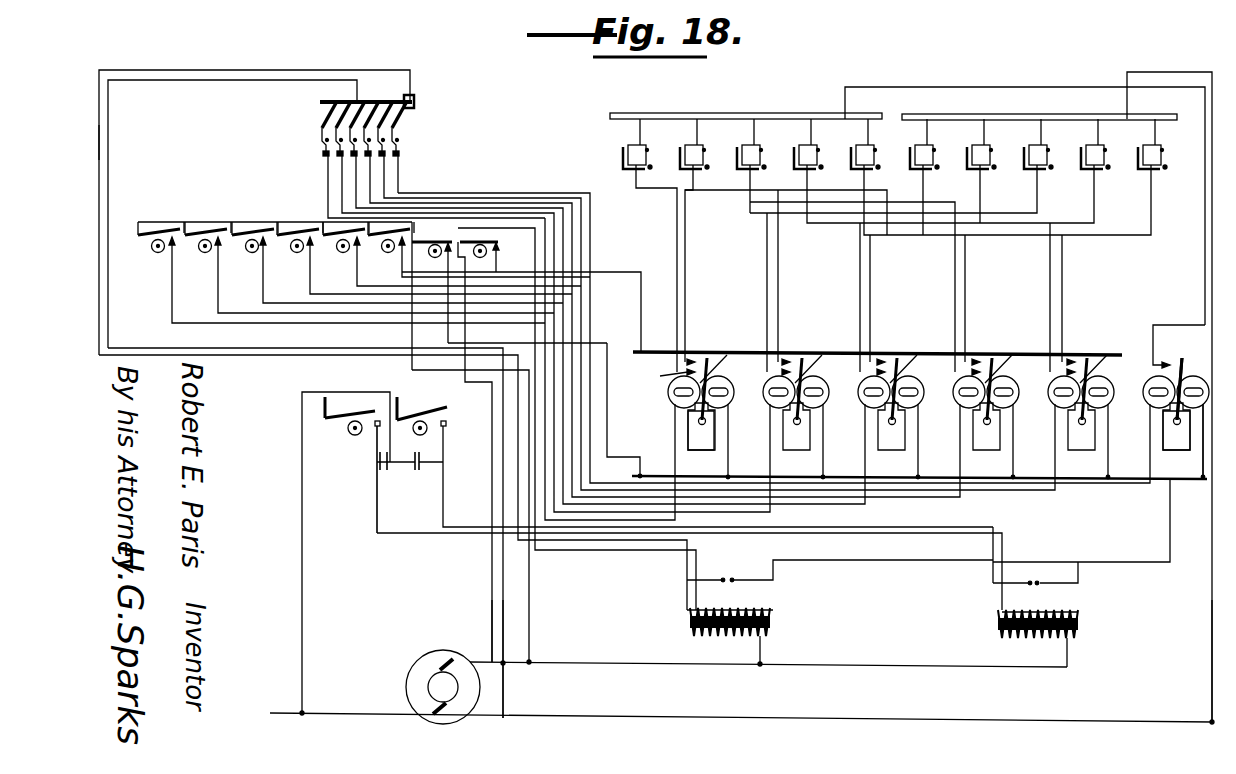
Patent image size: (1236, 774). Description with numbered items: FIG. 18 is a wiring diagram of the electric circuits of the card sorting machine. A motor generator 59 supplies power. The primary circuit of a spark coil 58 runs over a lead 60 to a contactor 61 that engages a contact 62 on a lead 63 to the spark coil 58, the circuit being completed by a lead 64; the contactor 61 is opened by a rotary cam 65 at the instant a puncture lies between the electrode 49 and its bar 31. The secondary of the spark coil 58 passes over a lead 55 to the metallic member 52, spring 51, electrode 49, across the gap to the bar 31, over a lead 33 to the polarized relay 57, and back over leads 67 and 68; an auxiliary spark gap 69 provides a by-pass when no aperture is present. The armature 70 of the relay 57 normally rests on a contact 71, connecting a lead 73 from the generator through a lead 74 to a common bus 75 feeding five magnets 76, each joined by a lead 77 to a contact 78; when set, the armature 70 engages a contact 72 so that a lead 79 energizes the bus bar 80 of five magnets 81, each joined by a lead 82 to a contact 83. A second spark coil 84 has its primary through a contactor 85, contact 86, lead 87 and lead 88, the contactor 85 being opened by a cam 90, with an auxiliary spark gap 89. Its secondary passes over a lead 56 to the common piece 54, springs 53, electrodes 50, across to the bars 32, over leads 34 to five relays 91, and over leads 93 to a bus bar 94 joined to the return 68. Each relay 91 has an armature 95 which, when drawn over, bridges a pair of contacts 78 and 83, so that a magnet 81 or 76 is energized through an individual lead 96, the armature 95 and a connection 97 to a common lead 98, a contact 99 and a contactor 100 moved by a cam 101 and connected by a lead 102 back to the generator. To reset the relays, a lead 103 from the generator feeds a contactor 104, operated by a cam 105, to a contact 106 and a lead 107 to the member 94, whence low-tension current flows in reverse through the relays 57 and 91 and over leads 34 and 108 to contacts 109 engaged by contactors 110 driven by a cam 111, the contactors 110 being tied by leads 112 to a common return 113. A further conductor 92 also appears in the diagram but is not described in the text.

The bar 31 is at (396, 170).
The bars 32 is at (322, 168).
The lead 33 is at (400, 186).
The leads 34 is at (330, 190).
The electrode 49 is at (390, 137).
The electrodes 50 is at (322, 140).
The spring 51 is at (404, 118).
The metallic member 52 is at (414, 98).
The springs 53 is at (324, 122).
The common metallic piece 54 is at (336, 104).
The lead 55 is at (236, 70).
The lead 56 is at (198, 82).
The polarized relay 57 is at (1176, 430).
The spark coil 58 is at (770, 616).
The motor generator 59 is at (430, 684).
The lead 60 is at (302, 573).
The contactor 61 is at (371, 412).
The contact 62 is at (377, 432).
The lead 63 is at (377, 518).
The lead 64 is at (760, 650).
The rotary cam 65 is at (350, 436).
The lead 67 is at (1203, 478).
The lead 68 is at (1170, 537).
The auxiliary spark gap 69 is at (742, 562).
The armature 70 is at (1158, 384).
The contact 71 is at (1184, 365).
The contact 72 is at (1162, 360).
The lead 73 is at (1212, 630).
The lead 74 is at (1190, 72).
The common bus 75 is at (1072, 115).
The magnets 76 is at (1150, 150).
The leads 77 is at (688, 252).
The contacts 78 is at (697, 352).
The lead 79 is at (1204, 252).
The bus bar 80 is at (797, 113).
The magnets 81 is at (646, 154).
The leads 82 is at (674, 232).
The contacts 83 is at (660, 378).
The spark coil 84 is at (998, 628).
The contactor 85 is at (421, 408).
The contact 86 is at (447, 425).
The lead 87 is at (443, 498).
The lead 88 is at (1067, 652).
The auxiliary spark gap 89 is at (1038, 584).
The cam 90 is at (418, 436).
The relays 91 is at (701, 430).
The conductor 92 is at (100, 140).
The lead 93 is at (728, 432).
The bus bar 94 is at (650, 476).
The armature 95 is at (726, 381).
The individual lead 96 is at (634, 128).
The connection 97 is at (733, 357).
The common lead 98 is at (607, 272).
The contact 99 is at (500, 248).
The contactor 100 is at (486, 242).
The cam 101 is at (482, 258).
The lead 102 is at (492, 592).
The lead 103 is at (504, 608).
The contactor 104 is at (440, 240).
The cam 105 is at (436, 258).
The contact 106 is at (452, 240).
The lead 107 is at (523, 345).
The leads 108 is at (240, 323).
The contacts 109 is at (215, 254).
The contactors 110 is at (234, 225).
The cam 111 is at (152, 253).
The leads 112 is at (187, 225).
The common return 113 is at (142, 222).